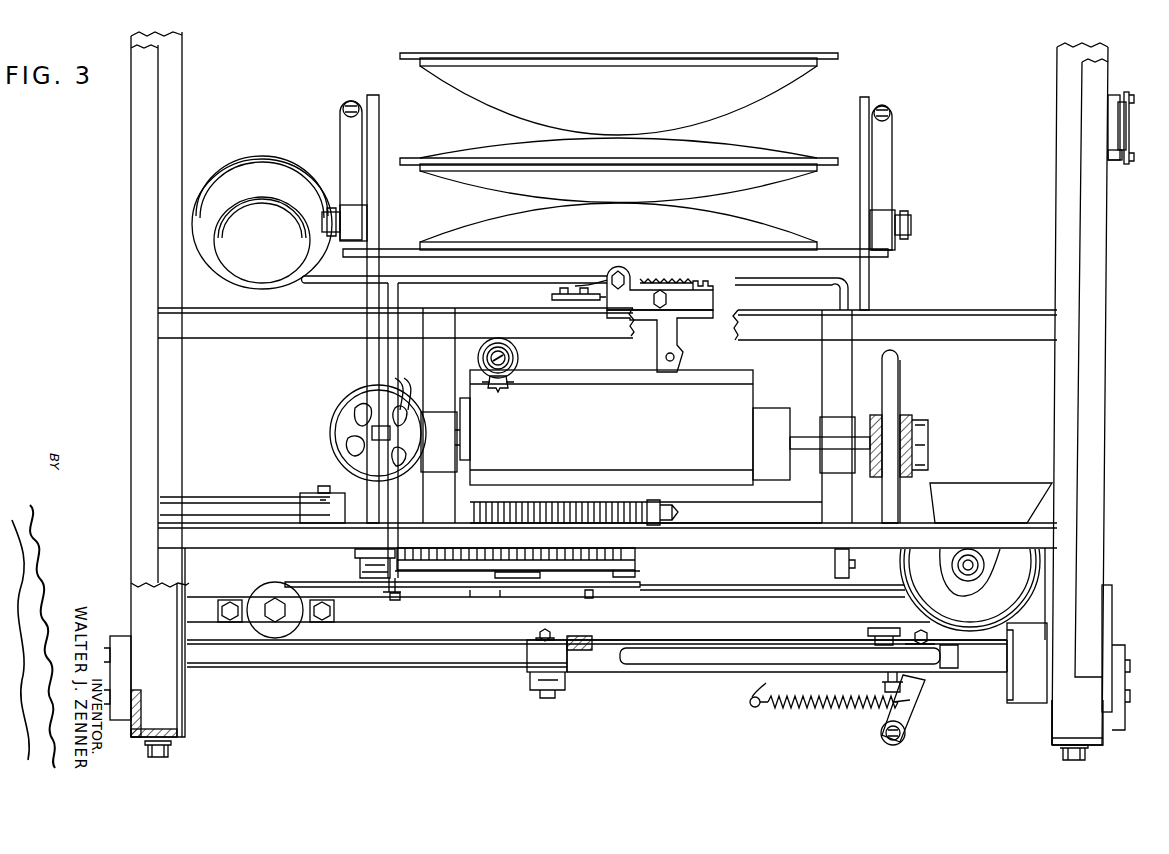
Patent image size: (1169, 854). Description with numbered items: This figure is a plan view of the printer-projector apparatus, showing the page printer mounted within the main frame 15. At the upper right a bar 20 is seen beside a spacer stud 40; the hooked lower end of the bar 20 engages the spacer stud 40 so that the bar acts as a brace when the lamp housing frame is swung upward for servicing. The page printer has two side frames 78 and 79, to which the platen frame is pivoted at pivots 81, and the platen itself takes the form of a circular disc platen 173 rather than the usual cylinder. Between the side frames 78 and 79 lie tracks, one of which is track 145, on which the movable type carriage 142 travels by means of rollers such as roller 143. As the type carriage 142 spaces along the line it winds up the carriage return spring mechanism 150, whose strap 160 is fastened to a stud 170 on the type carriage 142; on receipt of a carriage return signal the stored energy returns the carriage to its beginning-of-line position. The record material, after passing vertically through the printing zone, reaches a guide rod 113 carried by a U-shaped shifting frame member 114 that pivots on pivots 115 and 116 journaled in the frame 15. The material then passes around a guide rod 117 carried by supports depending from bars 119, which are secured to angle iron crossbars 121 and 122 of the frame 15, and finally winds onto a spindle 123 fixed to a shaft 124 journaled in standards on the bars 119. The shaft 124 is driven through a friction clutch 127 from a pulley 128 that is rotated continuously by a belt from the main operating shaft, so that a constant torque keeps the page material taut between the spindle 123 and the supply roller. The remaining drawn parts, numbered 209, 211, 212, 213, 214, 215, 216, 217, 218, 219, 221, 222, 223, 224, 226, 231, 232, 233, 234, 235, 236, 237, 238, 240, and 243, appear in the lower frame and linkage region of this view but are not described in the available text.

The frame 15 is at (225, 114).
The bar 20 is at (1118, 122).
The spacer stud 40 is at (1114, 160).
The side frame 78 is at (370, 147).
The side frame 79 is at (865, 167).
The pivot 81 is at (330, 214).
The guide rod 113 is at (777, 372).
The U-shaped shifting frame member 114 is at (835, 279).
The pivot 115 is at (358, 562).
The pivot 116 is at (855, 573).
The guide rod 117 is at (776, 500).
The bar 119 is at (447, 323).
The angle iron crossbar 121 is at (973, 338).
The angle iron crossbar 122 is at (970, 526).
The spindle 123 is at (766, 412).
The shaft 124 is at (805, 442).
The friction clutch 127 is at (912, 410).
The pulley 128 is at (901, 377).
The type carriage 142 is at (630, 560).
The roller 143 is at (320, 498).
The track 145 is at (207, 504).
The carriage return spring mechanism 150 is at (269, 166).
The strap 160 is at (346, 281).
The stud 170 is at (700, 285).
The platen 173 is at (520, 357).
The slide bar 209 is at (531, 580).
The guide rod 211 is at (503, 592).
The guide rod 212 is at (469, 592).
The bar 213 is at (300, 582).
The hanger 214 is at (391, 592).
The roller 215 is at (256, 594).
The clamp block 216 is at (590, 636).
The slotted bar 217 is at (584, 668).
The bolt bar 218 is at (345, 622).
The stud 219 is at (592, 592).
The rail 221 is at (754, 590).
The bar end 222 is at (956, 640).
The pivot bolt 223 is at (894, 658).
The bracket 224 is at (545, 692).
The lower rail 226 is at (456, 664).
The clamp 231 is at (875, 632).
The clamp bolt 232 is at (905, 630).
The wheel 233 is at (1022, 578).
The hopper 234 is at (990, 483).
The block 235 is at (1022, 692).
The foot bracket 236 is at (1043, 732).
The pivot 237 is at (887, 737).
The lever arm 238 is at (915, 704).
The spring 240 is at (866, 711).
The spring anchor 243 is at (762, 712).